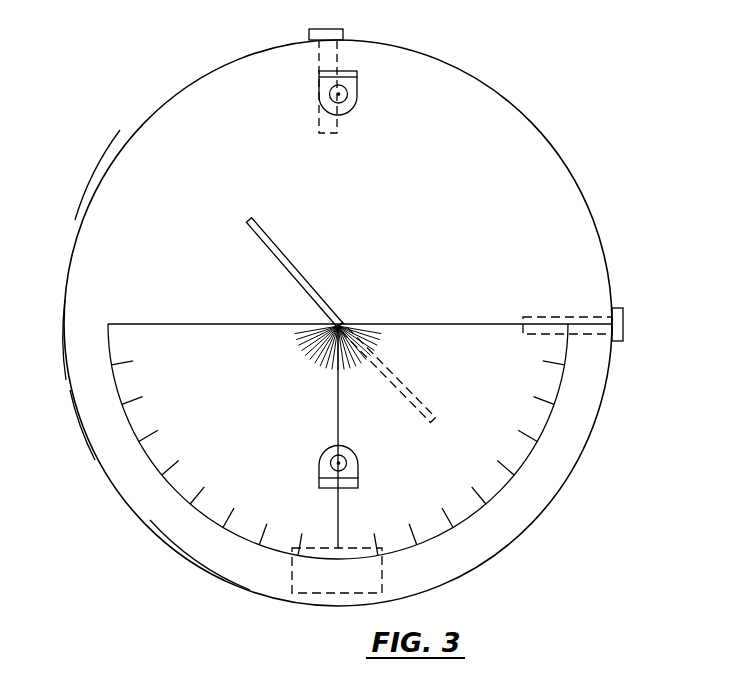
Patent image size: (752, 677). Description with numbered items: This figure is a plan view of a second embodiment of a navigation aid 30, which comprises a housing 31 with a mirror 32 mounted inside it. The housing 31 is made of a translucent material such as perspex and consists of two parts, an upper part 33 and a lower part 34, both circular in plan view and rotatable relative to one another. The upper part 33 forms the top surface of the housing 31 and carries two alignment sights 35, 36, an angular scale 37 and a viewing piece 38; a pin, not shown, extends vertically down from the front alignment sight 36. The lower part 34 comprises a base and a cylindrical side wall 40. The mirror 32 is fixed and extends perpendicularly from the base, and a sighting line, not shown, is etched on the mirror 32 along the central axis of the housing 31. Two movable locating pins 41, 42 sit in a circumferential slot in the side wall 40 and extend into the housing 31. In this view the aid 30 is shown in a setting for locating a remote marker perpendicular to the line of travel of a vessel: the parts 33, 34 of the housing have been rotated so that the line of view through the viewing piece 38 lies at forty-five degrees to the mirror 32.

The navigation aid 30 is at (572, 164).
The housing 31 is at (77, 235).
The mirror 32 is at (297, 272).
The upper part 33 is at (208, 555).
The lower part 34 is at (78, 413).
The alignment sight 35 is at (358, 479).
The front alignment sight 36 is at (357, 80).
The angular scale 37 is at (495, 498).
The viewing piece 38 is at (292, 594).
The cylindrical side wall 40 is at (65, 358).
The locating pin 41 is at (317, 32).
The locating pin 42 is at (617, 307).